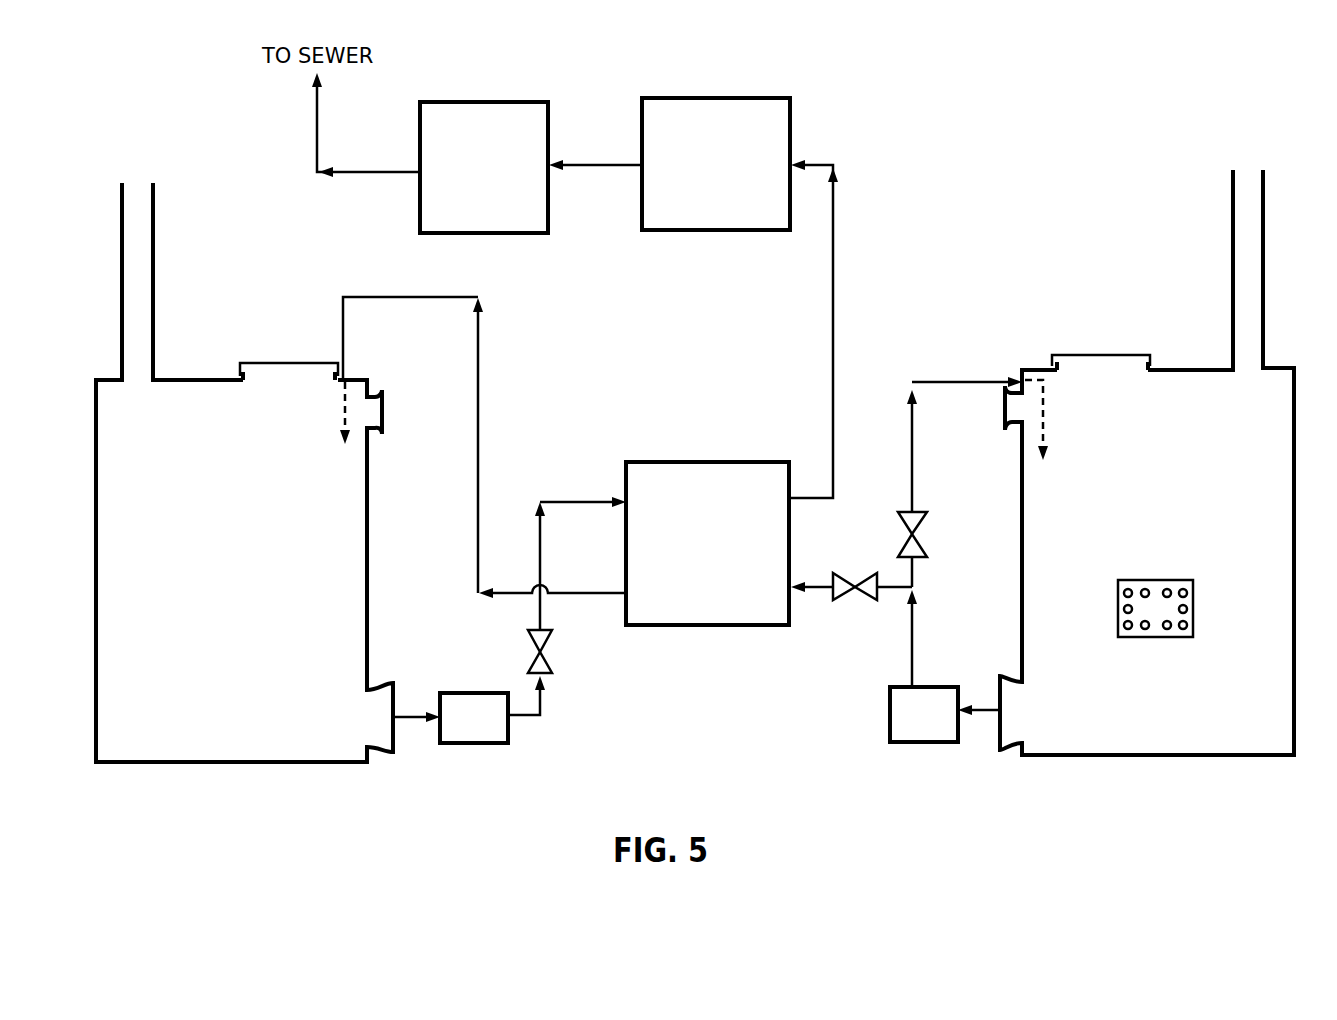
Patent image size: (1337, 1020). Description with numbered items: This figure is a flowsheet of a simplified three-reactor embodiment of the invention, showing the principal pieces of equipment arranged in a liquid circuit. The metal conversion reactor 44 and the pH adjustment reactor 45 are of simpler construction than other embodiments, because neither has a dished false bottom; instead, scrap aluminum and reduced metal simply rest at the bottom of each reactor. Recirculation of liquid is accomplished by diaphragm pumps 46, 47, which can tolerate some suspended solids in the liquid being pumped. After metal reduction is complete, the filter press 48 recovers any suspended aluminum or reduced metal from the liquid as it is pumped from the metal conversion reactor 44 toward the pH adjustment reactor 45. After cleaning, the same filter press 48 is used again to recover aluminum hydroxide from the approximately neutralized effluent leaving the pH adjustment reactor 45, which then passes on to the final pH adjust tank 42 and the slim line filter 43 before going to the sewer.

The final pH adjust tank 42 is at (702, 107).
The slim line filter 43 is at (473, 110).
The metal conversion reactor 44 is at (1240, 740).
The pH adjustment reactor 45 is at (318, 745).
The diaphragm pump 46 is at (940, 728).
The diaphragm pump 47 is at (493, 730).
The filter press 48 is at (725, 472).